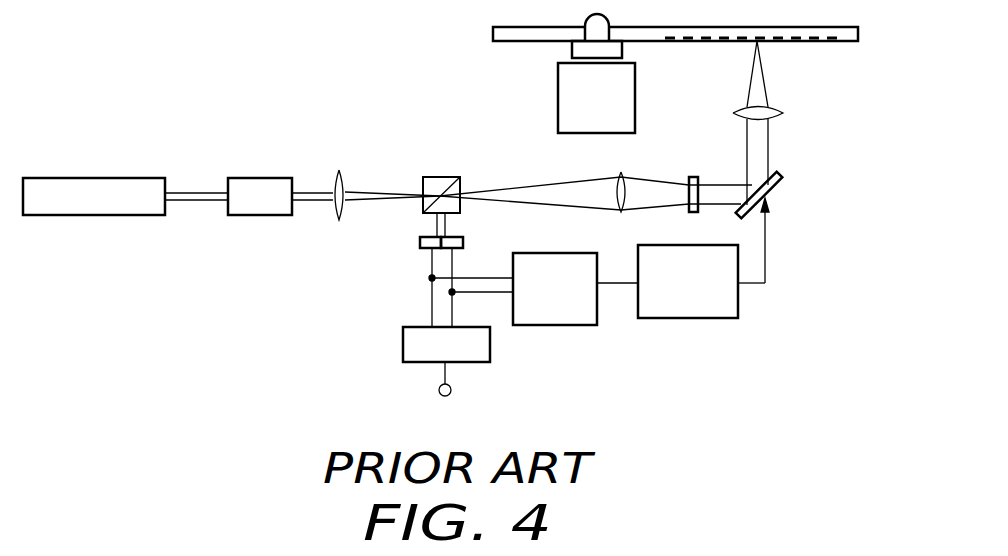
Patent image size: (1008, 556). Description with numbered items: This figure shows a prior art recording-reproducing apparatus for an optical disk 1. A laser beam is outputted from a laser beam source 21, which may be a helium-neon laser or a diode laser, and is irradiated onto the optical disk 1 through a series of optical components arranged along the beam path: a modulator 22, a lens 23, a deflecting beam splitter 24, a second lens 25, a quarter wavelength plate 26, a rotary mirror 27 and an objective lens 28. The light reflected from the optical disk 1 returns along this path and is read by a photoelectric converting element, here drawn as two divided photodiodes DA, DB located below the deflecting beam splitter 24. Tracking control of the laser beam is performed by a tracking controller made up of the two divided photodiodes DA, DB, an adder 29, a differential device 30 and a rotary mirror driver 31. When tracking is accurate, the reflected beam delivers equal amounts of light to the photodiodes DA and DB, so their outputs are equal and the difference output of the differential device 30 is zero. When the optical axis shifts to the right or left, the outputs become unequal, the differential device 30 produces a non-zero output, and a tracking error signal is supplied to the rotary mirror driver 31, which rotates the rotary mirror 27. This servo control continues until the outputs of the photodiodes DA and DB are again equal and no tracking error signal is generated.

The optical disk 1 is at (860, 37).
The laser beam source 21 is at (117, 178).
The modulator 22 is at (262, 177).
The lens 23 is at (345, 178).
The deflecting beam splitter 24 is at (432, 177).
The lens 25 is at (623, 212).
The ¼ wavelength plate 26 is at (691, 177).
The rotary mirror 27 is at (772, 188).
The objective lens 28 is at (781, 112).
The adder 29 is at (403, 344).
The differential device 30 is at (543, 325).
The rotary mirror driver 31 is at (680, 318).
The divided photodiode DA is at (420, 243).
The divided photodiode DB is at (464, 243).